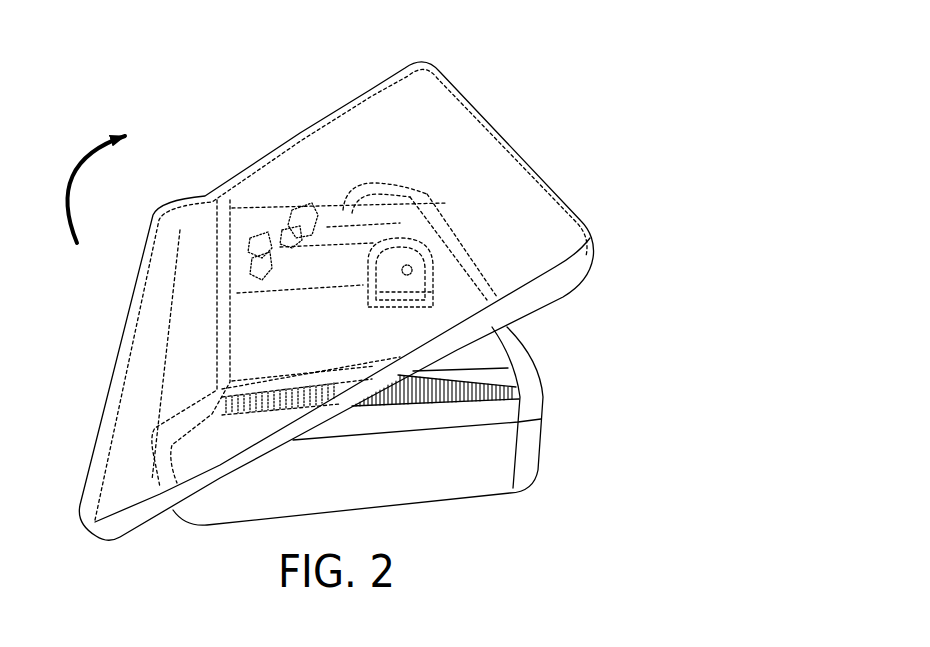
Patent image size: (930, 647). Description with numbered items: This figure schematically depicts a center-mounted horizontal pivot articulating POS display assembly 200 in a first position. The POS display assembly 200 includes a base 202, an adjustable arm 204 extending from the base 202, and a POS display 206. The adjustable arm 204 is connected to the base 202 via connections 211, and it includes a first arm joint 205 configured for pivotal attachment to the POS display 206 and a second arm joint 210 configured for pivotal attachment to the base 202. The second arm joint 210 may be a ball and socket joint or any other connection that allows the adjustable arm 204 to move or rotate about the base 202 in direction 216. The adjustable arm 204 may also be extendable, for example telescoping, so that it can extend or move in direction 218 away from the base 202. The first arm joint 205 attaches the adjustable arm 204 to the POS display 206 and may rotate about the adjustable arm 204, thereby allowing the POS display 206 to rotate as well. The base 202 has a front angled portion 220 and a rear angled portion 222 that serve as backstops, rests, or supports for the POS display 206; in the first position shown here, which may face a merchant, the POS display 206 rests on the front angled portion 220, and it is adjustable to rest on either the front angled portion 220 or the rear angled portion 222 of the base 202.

The POS display assembly 200 is at (540, 30).
The base 202 is at (428, 478).
The adjustable arm 204 is at (357, 237).
The first arm joint 205 is at (297, 197).
The POS display 206 is at (510, 188).
The second arm joint 210 is at (413, 248).
The connections 211 is at (419, 203).
The direction 216 is at (108, 131).
The direction 218 is at (293, 302).
The front angled portion 220 is at (260, 260).
The rear angled portion 222 is at (474, 280).